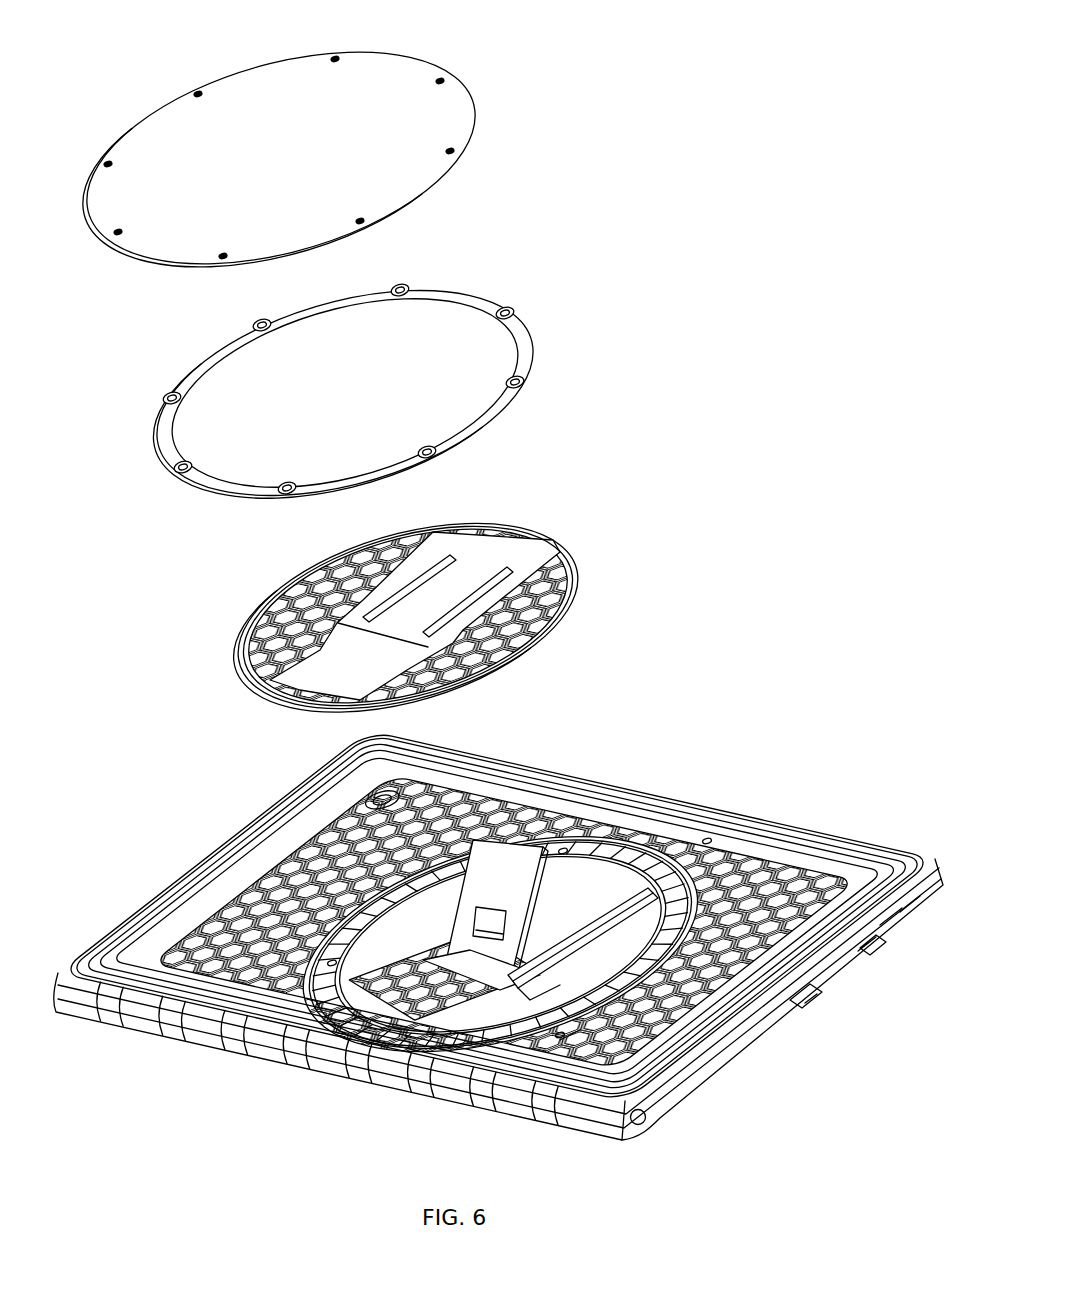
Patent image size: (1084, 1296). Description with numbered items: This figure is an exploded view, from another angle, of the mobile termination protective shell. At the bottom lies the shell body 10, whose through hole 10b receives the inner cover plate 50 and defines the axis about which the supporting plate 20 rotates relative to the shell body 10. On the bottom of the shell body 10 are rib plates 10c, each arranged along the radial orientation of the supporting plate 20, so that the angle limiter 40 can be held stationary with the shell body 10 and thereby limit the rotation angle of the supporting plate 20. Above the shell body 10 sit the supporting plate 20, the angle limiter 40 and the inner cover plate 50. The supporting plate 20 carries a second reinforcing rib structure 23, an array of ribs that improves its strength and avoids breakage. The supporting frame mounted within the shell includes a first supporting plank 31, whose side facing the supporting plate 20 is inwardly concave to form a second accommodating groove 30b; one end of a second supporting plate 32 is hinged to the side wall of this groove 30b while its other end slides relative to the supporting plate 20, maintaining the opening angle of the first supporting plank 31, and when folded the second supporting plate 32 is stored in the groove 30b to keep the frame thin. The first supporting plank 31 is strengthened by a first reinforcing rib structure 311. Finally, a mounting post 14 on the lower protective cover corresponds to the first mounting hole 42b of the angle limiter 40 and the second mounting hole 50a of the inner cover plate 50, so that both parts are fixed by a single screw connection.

The shell body 10 is at (803, 833).
The through hole 10b is at (453, 1070).
The rib plate 10c is at (353, 917).
The mounting post 14 is at (563, 850).
The supporting plate 20 is at (560, 543).
The second reinforcing rib structure 23 is at (557, 610).
The second accommodating groove 30b is at (660, 847).
The first supporting plank 31 is at (583, 913).
The first reinforcing rib structure 311 is at (360, 1030).
The second supporting plate 32 is at (493, 847).
The angle limiter 40 is at (522, 345).
The first mounting hole 42b is at (507, 313).
The inner cover plate 50 is at (400, 68).
The second mounting hole 50a is at (447, 80).